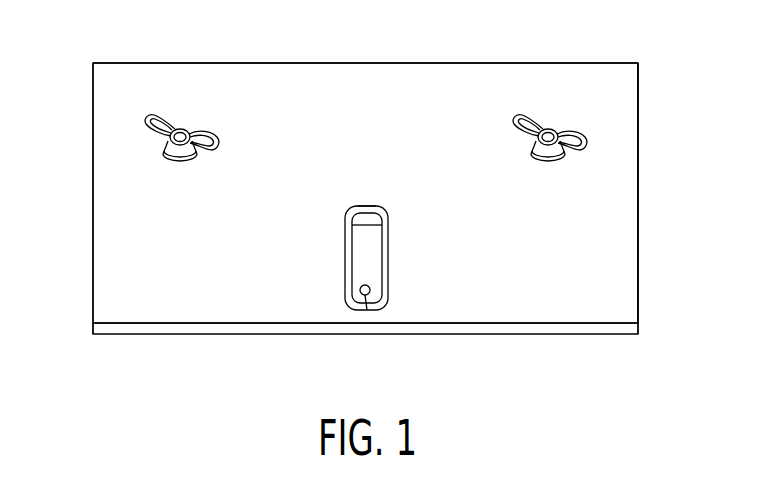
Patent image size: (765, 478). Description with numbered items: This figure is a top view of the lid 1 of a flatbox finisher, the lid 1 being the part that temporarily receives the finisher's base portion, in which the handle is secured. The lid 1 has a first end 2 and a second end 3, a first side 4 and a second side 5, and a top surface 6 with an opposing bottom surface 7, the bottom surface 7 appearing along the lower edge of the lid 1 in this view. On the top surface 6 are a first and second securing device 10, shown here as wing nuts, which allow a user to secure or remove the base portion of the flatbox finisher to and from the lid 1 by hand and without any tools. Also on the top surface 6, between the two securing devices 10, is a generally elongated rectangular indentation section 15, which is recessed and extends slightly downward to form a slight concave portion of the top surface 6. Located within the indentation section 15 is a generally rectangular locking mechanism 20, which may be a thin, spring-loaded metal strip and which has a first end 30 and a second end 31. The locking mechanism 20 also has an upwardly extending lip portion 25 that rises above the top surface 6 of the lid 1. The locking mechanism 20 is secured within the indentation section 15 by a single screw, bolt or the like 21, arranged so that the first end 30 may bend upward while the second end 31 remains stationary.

The lid 1 is at (120, 208).
The first end 2 is at (540, 323).
The second end 3 is at (365, 63).
The first side 4 is at (93, 258).
The second side 5 is at (638, 258).
The top surface 6 is at (612, 208).
The bottom surface 7 is at (348, 334).
The securing device 10 is at (184, 128).
The generally elongated rectangular indentation section 15 is at (382, 262).
The generally rectangular locking mechanism 20 is at (365, 248).
The screw, bolt or the like 21 is at (362, 288).
The upwardly extending lip portion 25 is at (372, 217).
The first end 30 is at (367, 208).
The second end 31 is at (367, 310).